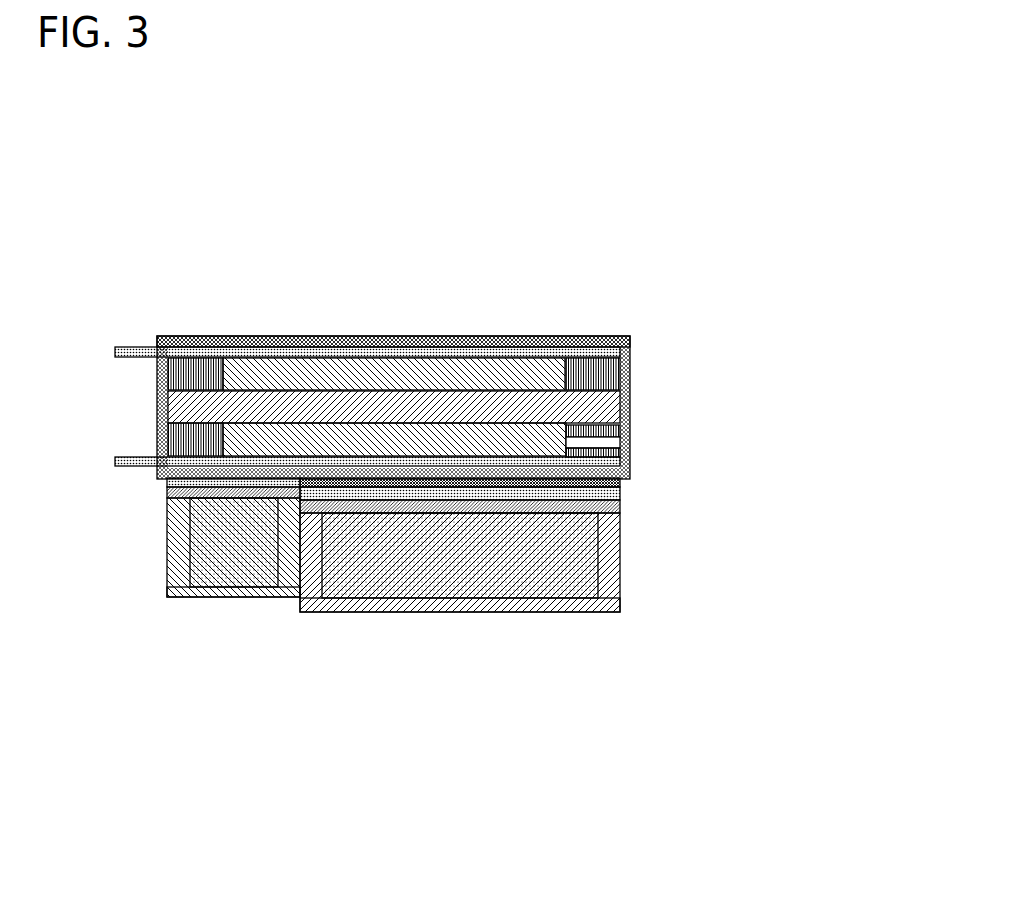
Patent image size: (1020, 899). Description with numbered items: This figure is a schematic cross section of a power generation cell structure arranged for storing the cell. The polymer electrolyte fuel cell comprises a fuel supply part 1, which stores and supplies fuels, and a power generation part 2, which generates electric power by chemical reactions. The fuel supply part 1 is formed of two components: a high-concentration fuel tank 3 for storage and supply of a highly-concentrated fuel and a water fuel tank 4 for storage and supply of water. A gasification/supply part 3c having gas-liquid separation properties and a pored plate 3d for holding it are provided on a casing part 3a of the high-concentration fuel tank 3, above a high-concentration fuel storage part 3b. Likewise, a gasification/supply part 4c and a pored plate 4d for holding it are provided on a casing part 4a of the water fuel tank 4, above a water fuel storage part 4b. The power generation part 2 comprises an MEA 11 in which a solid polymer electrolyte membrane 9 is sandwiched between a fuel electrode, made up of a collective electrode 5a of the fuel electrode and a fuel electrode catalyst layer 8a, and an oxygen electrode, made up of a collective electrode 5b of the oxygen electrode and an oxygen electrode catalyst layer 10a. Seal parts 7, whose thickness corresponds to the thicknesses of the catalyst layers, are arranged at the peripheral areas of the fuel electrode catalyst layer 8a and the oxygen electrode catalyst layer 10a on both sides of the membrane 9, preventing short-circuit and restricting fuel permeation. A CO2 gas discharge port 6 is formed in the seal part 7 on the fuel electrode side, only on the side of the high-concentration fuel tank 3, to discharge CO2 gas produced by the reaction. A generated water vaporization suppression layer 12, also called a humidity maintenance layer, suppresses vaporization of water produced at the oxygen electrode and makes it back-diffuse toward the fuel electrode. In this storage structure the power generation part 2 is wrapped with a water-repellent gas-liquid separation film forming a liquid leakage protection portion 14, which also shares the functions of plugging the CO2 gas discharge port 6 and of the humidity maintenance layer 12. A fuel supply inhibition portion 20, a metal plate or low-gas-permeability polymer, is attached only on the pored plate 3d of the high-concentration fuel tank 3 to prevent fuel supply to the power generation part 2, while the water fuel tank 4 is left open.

The fuel supply part 1 is at (455, 620).
The power generation part 2 is at (472, 333).
The high-concentration fuel tank 3 is at (585, 625).
The casing part 3a is at (466, 613).
The high-concentration fuel storage part 3b is at (498, 558).
The gasification/supply part 3c is at (532, 515).
The pored plate 3d is at (566, 505).
The water fuel tank 4 is at (170, 620).
The casing part 4a is at (267, 602).
The water fuel storage part 4b is at (247, 557).
The gasification/supply part 4c is at (224, 502).
The pored plate 4d is at (202, 488).
The collective electrode of fuel electrode 5a is at (460, 453).
The collective electrode of oxygen electrode 5b is at (415, 343).
The CO2 gas discharge port 6 is at (628, 428).
The seal part 7 is at (203, 427).
The fuel electrode catalyst layer 8a is at (440, 443).
The solid polymer electrolyte membrane 9 is at (443, 410).
The oxygen electrode catalyst layer 10a is at (438, 377).
The MEA 11 is at (457, 321).
The generated water vaporization suppression layer 12 is at (300, 335).
The liquid leakage protection portion 14 is at (352, 376).
The fuel supply inhibition portion 20 is at (412, 497).